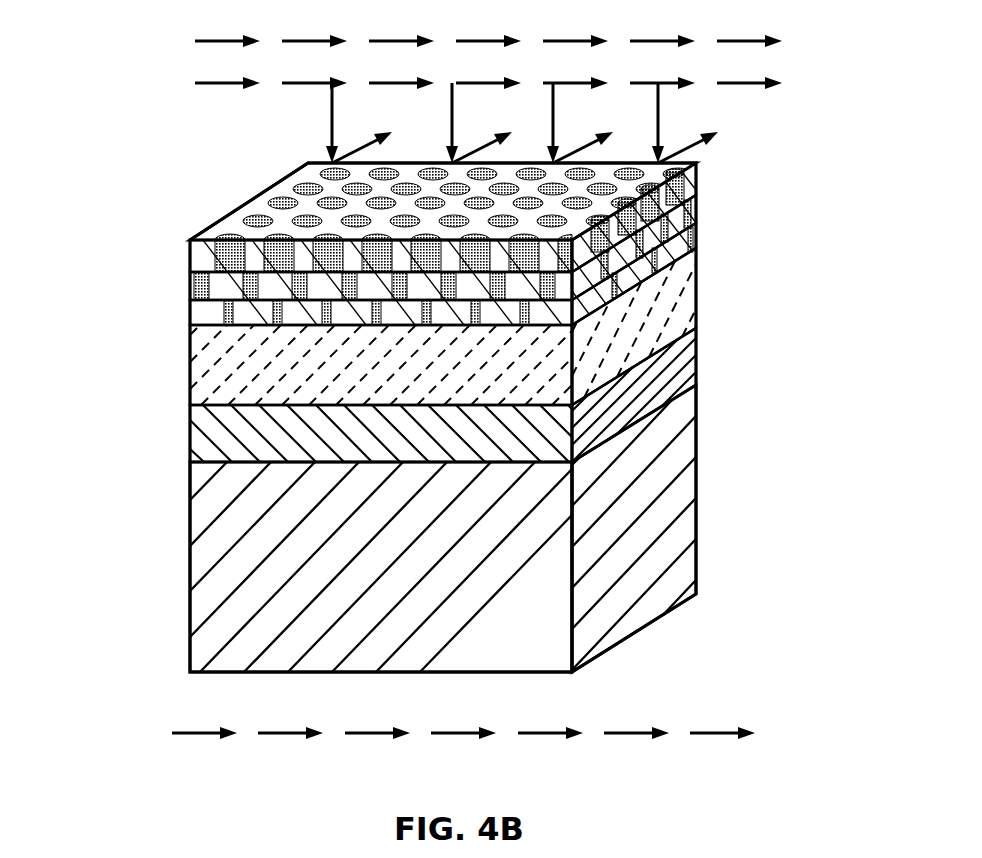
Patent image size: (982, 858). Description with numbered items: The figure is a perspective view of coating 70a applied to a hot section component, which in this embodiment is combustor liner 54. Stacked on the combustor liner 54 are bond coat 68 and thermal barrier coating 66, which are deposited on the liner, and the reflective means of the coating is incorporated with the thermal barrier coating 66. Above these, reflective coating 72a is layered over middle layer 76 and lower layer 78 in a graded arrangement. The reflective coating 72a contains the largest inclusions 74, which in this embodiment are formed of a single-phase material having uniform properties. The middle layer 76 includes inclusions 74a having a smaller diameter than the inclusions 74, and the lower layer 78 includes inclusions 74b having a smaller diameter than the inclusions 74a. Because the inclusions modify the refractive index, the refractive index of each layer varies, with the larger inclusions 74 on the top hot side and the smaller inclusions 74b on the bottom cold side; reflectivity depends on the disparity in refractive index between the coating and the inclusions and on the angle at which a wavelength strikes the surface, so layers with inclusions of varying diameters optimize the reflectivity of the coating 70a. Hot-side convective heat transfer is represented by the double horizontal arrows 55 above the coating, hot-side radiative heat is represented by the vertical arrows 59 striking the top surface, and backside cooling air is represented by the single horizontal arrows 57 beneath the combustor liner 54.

The coating 70a is at (424, 396).
The reflective coating 72a is at (187, 257).
The inclusions 74 is at (307, 183).
The inclusions 74a is at (690, 210).
The inclusions 74b is at (690, 227).
The middle layer 76 is at (187, 287).
The lower layer 78 is at (187, 313).
The thermal barrier coating 66 is at (187, 375).
The bond coat 68 is at (685, 352).
The combustor liner 54 is at (188, 565).
The double horizontal arrows 55 is at (222, 83).
The single horizontal arrows 57 is at (205, 732).
The vertical arrows 59 is at (332, 120).